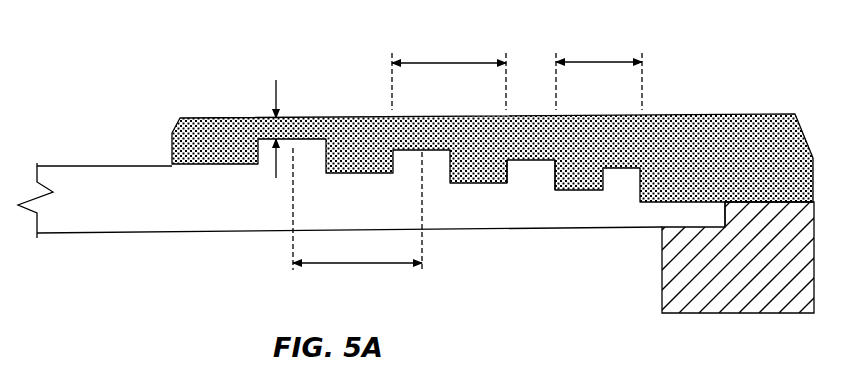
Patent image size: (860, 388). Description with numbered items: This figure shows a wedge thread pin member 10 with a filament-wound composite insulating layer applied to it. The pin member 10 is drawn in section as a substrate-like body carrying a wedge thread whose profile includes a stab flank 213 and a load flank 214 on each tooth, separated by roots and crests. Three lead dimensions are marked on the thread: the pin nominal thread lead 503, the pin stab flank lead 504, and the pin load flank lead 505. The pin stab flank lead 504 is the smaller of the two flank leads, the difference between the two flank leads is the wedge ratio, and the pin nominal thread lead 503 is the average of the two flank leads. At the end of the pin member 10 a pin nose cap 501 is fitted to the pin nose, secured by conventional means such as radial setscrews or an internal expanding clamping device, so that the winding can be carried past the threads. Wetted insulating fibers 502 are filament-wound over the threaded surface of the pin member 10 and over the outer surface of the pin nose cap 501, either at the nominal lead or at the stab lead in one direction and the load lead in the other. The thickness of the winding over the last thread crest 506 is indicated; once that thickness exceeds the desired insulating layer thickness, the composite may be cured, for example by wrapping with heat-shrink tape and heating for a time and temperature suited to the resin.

The pin member 10 is at (127, 233).
The pin nose cap 501 is at (738, 313).
The wetted insulating fibers 502 is at (737, 114).
The pin nominal thread lead 503 is at (358, 265).
The pin stab flank lead 504 is at (598, 62).
The pin load flank lead 505 is at (452, 62).
The last thread crest 506 is at (276, 93).
The stab flank 213 is at (509, 161).
The load flank 214 is at (553, 162).